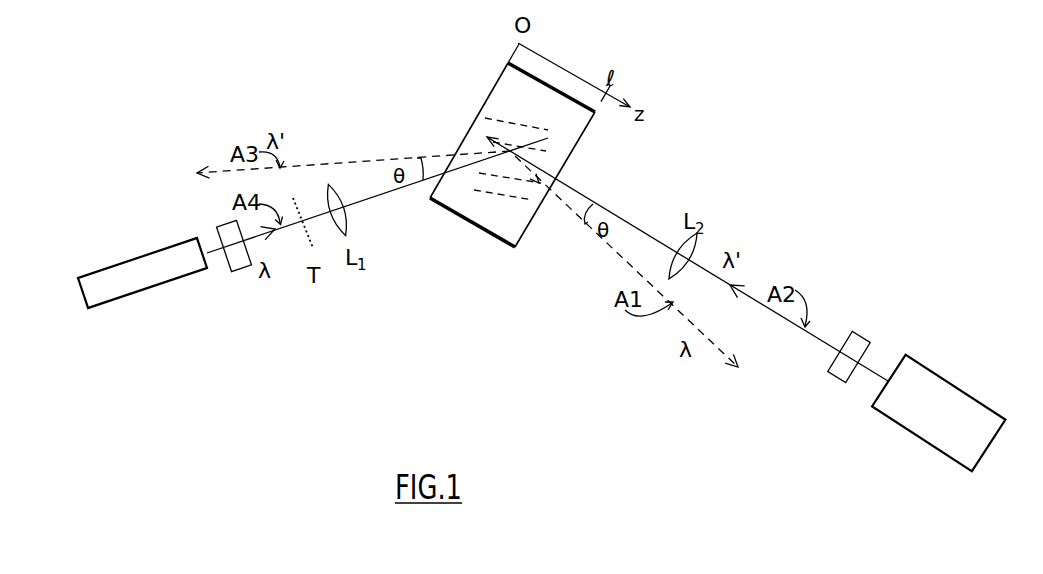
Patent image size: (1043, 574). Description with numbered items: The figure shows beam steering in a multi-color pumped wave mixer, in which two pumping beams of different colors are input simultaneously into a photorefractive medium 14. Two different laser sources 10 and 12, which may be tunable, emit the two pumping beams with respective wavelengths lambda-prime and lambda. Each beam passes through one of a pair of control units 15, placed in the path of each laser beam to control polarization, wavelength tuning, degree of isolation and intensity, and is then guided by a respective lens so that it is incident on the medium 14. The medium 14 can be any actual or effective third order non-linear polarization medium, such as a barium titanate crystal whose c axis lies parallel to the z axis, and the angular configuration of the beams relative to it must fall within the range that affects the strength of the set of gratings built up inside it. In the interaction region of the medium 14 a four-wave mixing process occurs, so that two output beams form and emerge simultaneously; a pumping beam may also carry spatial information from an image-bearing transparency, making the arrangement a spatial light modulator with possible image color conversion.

The laser source 10 is at (985, 400).
The laser source 12 is at (100, 268).
The photorefractive medium 14 is at (485, 100).
The control unit 15 is at (230, 273).